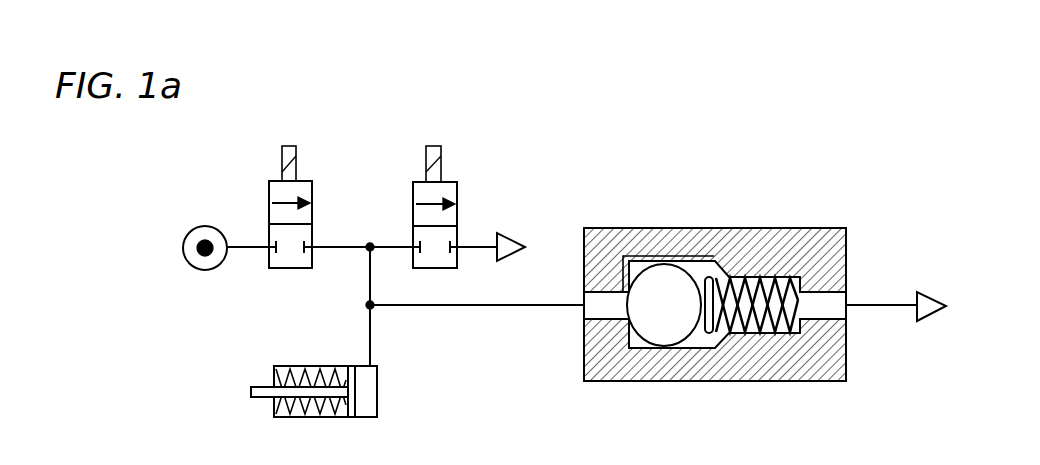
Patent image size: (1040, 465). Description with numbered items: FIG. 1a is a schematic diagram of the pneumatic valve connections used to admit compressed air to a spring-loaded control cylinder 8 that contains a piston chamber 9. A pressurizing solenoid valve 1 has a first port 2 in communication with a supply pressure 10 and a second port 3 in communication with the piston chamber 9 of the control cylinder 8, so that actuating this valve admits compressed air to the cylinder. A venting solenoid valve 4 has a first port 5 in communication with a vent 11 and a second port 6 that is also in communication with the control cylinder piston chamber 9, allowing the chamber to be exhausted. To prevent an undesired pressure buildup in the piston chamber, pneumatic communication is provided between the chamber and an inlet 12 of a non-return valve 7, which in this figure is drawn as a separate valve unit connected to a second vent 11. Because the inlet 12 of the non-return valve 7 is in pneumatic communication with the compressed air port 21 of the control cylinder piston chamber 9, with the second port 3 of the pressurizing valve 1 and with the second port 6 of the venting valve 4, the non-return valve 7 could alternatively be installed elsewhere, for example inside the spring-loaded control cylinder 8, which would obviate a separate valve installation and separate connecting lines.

The pressurizing valve 1 is at (318, 158).
The first port 2 is at (268, 266).
The second port 3 is at (307, 252).
The venting valve 4 is at (468, 155).
The first port 5 is at (457, 246).
The second port 6 is at (414, 246).
The non-return valve 7 is at (792, 184).
The spring-loaded control cylinder 8 is at (416, 395).
The piston chamber 9 is at (365, 414).
The supply pressure 10 is at (193, 238).
The vent 11 is at (517, 240).
The inlet 12 is at (597, 310).
The compressed air port 21 is at (372, 366).